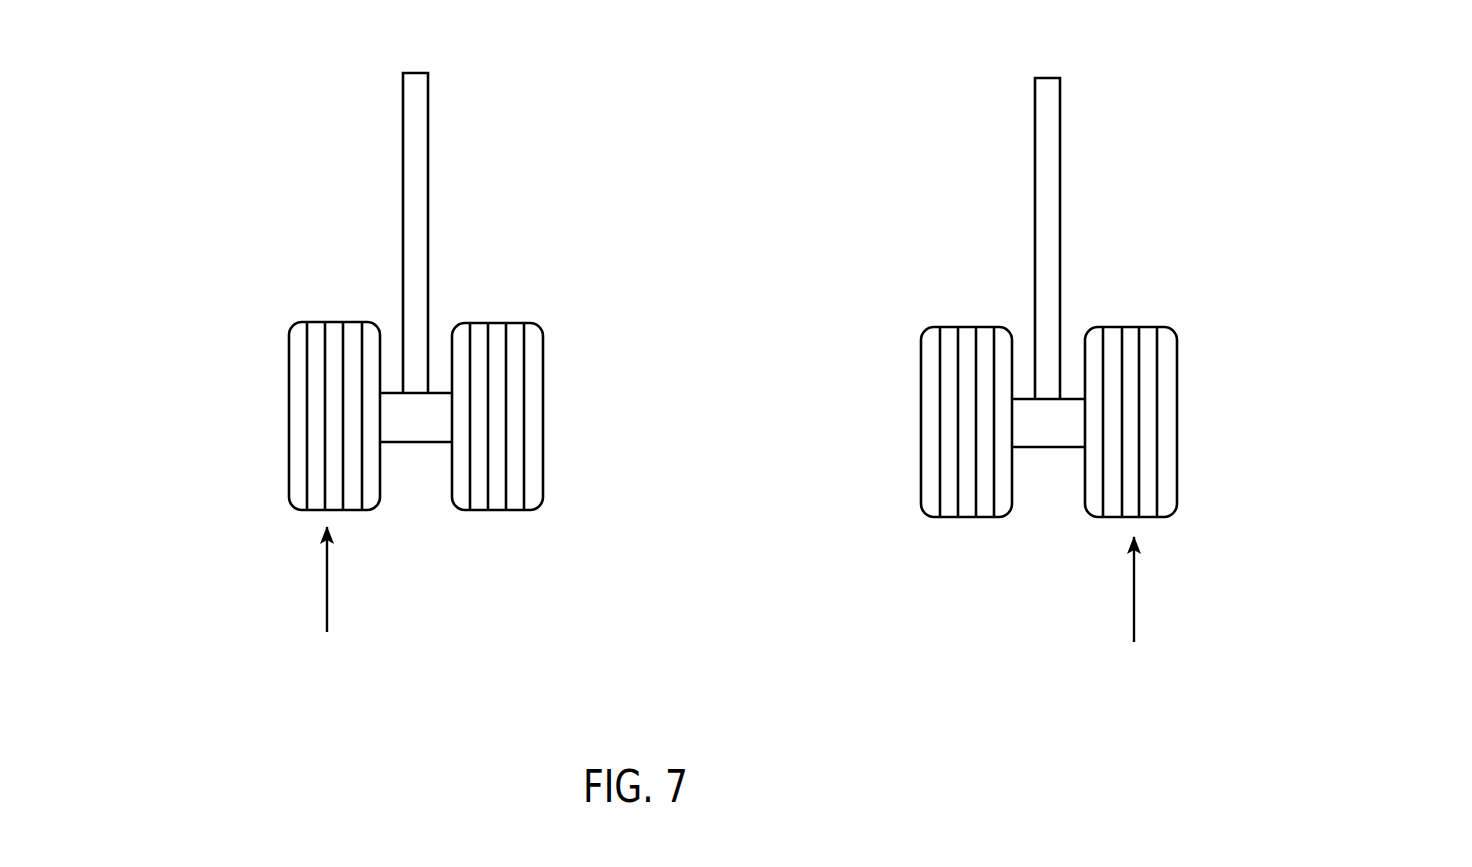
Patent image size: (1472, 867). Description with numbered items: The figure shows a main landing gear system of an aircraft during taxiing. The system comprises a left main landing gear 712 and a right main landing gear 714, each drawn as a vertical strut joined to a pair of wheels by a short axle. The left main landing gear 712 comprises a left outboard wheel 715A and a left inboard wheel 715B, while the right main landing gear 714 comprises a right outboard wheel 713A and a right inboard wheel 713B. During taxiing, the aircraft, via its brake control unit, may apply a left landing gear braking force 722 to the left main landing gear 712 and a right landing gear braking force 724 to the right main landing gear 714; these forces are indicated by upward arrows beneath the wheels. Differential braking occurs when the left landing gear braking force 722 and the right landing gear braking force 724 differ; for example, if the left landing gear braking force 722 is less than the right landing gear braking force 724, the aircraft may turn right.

The left main landing gear 712 is at (1107, 303).
The right outboard wheel 713A is at (1147, 462).
The right inboard wheel 713B is at (938, 417).
The right main landing gear 714 is at (386, 291).
The left outboard wheel 715A is at (310, 362).
The left inboard wheel 715B is at (520, 410).
The left landing gear braking force 722 is at (1133, 590).
The right landing gear braking force 724 is at (322, 585).